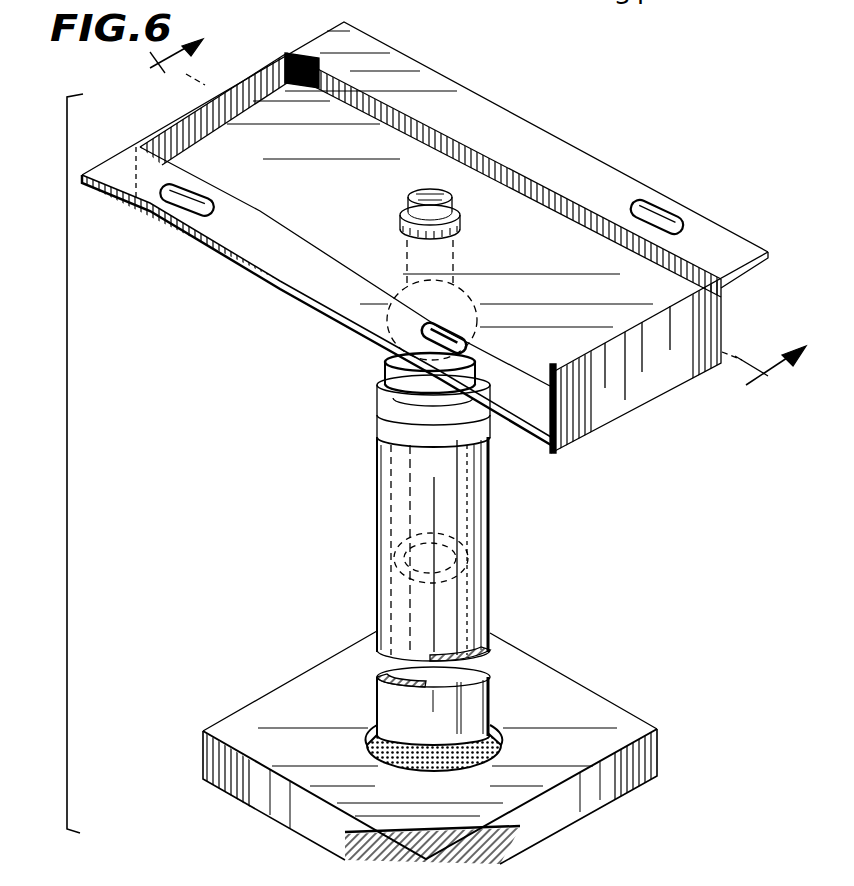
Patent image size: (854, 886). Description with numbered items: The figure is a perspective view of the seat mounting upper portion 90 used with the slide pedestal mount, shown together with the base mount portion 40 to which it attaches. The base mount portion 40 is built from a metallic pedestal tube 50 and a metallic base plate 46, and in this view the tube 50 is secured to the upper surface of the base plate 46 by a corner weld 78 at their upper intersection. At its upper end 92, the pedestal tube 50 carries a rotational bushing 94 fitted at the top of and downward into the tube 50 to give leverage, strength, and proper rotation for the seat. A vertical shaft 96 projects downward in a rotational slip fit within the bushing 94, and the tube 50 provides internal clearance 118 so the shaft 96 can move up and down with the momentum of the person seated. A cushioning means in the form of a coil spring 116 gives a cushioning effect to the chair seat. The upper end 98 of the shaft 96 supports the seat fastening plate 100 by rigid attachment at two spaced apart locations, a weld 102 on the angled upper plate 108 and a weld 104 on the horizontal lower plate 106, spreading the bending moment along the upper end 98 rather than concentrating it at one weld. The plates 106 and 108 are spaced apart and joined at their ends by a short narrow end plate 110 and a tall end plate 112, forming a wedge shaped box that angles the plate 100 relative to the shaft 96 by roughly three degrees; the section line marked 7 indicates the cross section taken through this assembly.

The support pedestal assembly 40 is at (614, 624).
The base plate 46 is at (632, 724).
The pedestal tube 50 is at (495, 552).
The weld 78 is at (500, 735).
The seat mounting upper portion 90 is at (282, 353).
The upper end of tube 92 is at (377, 434).
The rotational bushing 94 is at (380, 398).
The vertical shaft 96 is at (410, 484).
The upper end of shaft 98 is at (406, 240).
The seat fastening plate 100 is at (628, 177).
The weld 102 is at (462, 222).
The weld 104 is at (470, 282).
The horizontal lower plate 106 is at (545, 450).
The angled upper plate 108 is at (288, 72).
The short narrow end plate 110 is at (160, 130).
The tall end plate 112 is at (617, 405).
The coil spring 116 is at (386, 364).
The internal clearance 118 is at (392, 558).
The section line 7- 7 is at (467, 223).